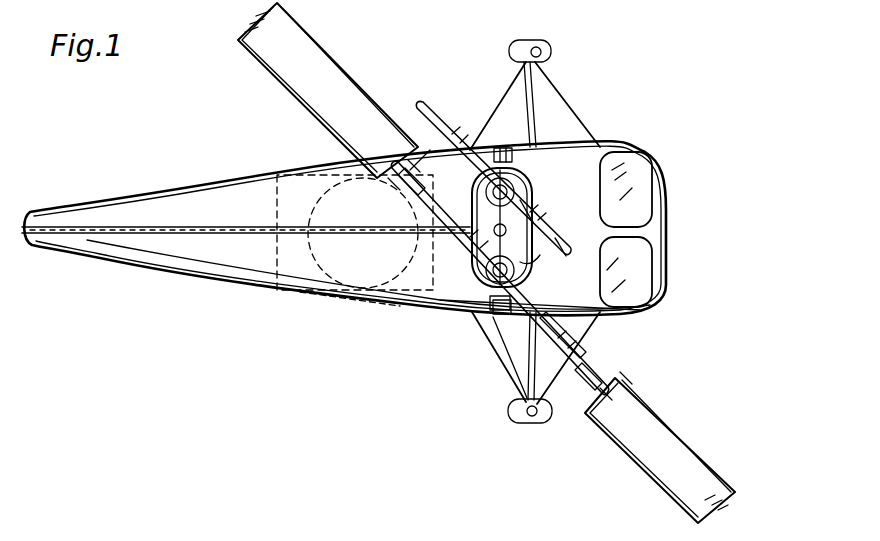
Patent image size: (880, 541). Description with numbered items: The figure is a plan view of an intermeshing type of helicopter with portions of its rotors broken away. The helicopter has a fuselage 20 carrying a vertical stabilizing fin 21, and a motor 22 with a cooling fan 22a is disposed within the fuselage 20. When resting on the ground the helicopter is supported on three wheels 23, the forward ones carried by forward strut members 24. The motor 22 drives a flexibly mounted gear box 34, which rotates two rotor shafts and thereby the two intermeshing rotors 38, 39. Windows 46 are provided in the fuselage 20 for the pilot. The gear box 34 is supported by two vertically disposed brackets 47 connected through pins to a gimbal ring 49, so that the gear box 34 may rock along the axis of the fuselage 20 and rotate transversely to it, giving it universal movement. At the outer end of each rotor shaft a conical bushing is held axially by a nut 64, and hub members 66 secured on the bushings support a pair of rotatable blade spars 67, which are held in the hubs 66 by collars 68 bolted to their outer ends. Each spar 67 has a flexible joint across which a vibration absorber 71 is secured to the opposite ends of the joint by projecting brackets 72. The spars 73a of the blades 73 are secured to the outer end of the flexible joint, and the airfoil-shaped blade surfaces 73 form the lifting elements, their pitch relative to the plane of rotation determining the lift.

The fuselage 20 is at (425, 298).
The vertical stabilizing fin 21 is at (160, 230).
The motor 22 is at (335, 300).
The cooling fan 22a is at (395, 307).
The wheels 23 is at (545, 45).
The forward strut members 24 is at (533, 100).
The gear box 34 is at (535, 278).
The rotor 38 is at (530, 187).
The rotor 39 is at (542, 296).
The windows 46 is at (643, 245).
The brackets 47 is at (512, 157).
The gimbal ring 49 is at (388, 230).
The nut 64 is at (493, 317).
The hub members 66 is at (497, 147).
The blade spars 67 is at (455, 133).
The collars 68 is at (548, 212).
The vibration absorber 71 is at (415, 172).
The projecting brackets 72 is at (430, 122).
The blades 73 is at (305, 88).
The blade spars 73a is at (395, 172).